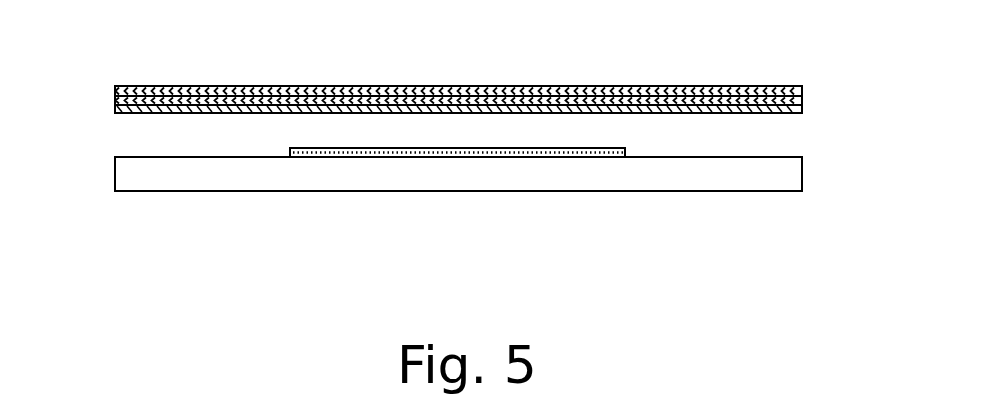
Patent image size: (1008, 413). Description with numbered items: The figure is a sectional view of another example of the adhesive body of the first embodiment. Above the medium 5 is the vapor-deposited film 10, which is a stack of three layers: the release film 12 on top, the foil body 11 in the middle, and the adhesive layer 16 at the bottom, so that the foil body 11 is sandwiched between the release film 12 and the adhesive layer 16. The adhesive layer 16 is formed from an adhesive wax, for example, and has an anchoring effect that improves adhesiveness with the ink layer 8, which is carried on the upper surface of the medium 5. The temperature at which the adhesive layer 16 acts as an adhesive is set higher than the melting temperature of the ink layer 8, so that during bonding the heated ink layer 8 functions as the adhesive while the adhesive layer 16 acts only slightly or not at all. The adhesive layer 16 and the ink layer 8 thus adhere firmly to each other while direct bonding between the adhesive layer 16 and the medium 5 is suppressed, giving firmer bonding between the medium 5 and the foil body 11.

The vapor-deposited film 10 is at (462, 111).
The release film 12 is at (115, 91).
The foil body 11 is at (115, 100).
The adhesive layer 16 is at (115, 108).
The ink layer 8 is at (632, 155).
The medium 5 is at (804, 170).